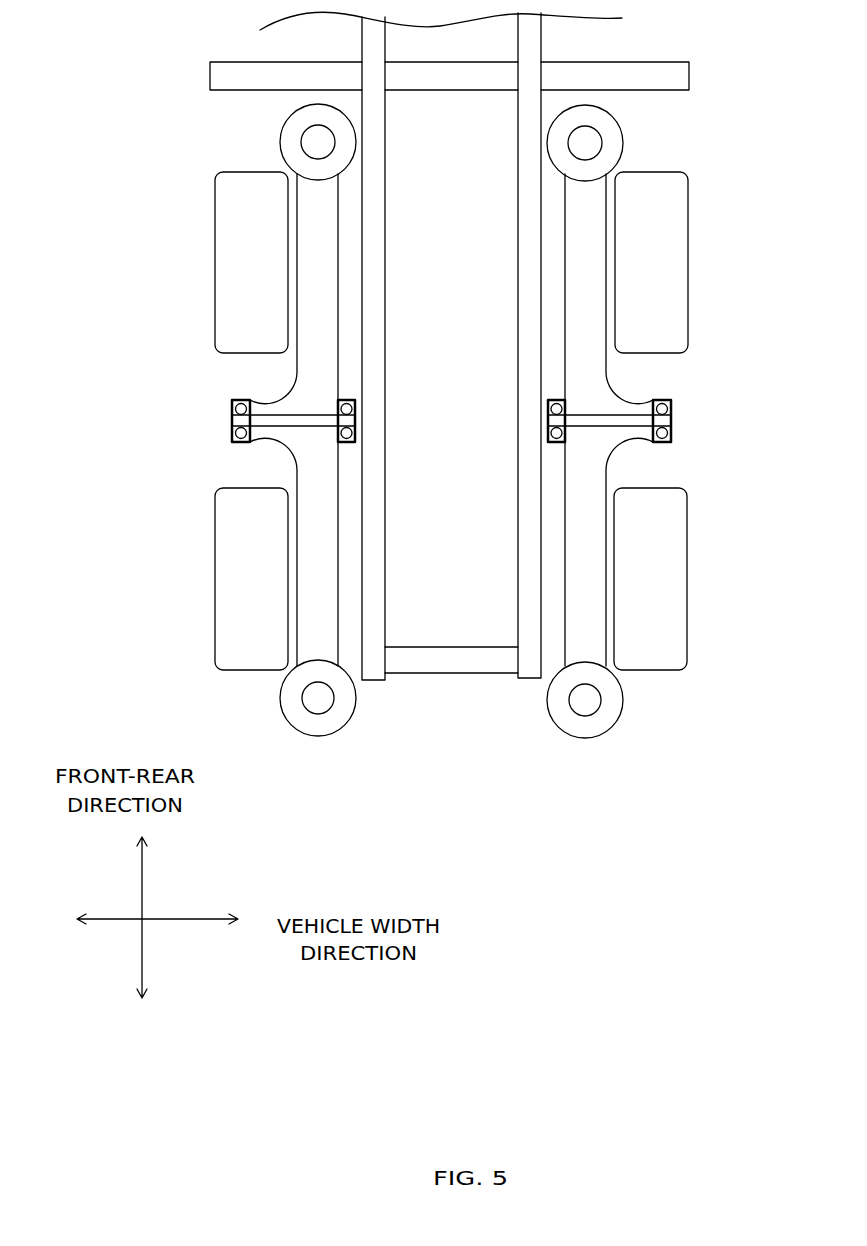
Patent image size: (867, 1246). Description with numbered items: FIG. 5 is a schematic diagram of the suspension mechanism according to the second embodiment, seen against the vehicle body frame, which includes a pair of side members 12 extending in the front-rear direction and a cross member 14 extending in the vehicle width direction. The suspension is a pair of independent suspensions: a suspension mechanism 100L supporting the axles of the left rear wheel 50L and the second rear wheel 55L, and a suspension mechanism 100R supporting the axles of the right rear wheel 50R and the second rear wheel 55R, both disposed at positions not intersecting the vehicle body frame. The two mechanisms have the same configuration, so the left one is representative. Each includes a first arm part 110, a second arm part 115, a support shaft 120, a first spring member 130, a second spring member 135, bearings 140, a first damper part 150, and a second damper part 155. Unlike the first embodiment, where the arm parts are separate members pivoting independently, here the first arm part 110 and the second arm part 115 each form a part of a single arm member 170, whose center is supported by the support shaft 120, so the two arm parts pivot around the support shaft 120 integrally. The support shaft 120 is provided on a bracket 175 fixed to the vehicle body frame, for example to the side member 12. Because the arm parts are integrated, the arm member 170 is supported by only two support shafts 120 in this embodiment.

The side member 12 is at (385, 505).
The cross member 14 is at (442, 92).
The left rear wheel 50L is at (224, 574).
The right rear wheel 50R is at (679, 580).
The second rear wheel 55L is at (227, 250).
The second rear wheel 55R is at (676, 250).
The suspension mechanism 100L is at (318, 757).
The suspension mechanism 100R is at (580, 757).
The first arm part 110 is at (297, 478).
The second arm part 115 is at (300, 213).
The support shaft 120 is at (232, 431).
The first spring member 130 is at (351, 716).
The second spring member 135 is at (292, 115).
The bearings 140 is at (232, 410).
The first damper part 150 is at (302, 700).
The second damper part 155 is at (302, 146).
The arm member 170 is at (452, 420).
The bracket 175 is at (235, 399).